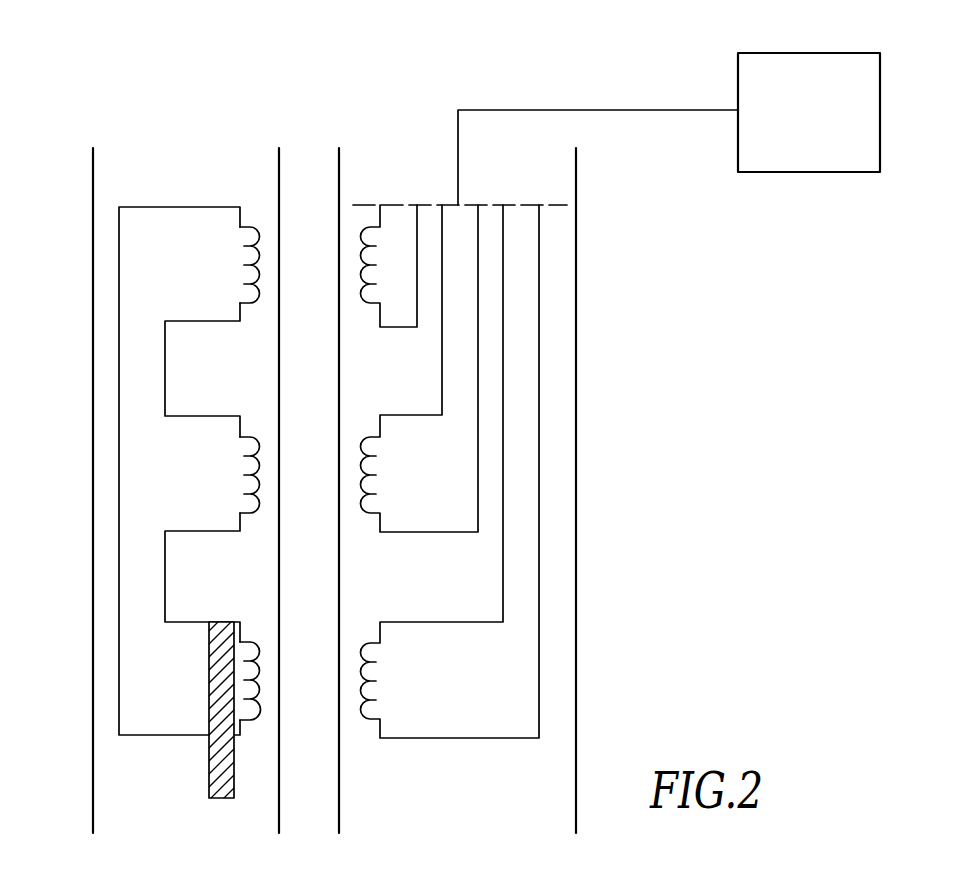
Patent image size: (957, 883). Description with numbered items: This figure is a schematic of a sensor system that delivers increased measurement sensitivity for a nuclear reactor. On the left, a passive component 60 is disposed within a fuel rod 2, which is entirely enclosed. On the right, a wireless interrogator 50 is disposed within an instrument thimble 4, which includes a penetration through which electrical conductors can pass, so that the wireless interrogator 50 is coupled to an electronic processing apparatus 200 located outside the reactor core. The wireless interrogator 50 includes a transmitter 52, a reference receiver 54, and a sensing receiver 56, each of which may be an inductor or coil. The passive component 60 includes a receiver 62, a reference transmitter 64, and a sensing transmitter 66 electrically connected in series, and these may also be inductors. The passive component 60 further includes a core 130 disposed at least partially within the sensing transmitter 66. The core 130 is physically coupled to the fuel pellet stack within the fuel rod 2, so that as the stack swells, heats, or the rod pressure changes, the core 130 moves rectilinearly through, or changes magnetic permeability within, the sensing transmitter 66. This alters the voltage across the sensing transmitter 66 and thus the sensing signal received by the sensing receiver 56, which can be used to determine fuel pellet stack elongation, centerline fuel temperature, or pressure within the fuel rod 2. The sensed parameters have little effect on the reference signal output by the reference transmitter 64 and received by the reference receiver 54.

The fuel rod 2 is at (93, 530).
The instrument thimble 4 is at (576, 497).
The wireless interrogator 50 is at (455, 526).
The transmitter 52 is at (363, 296).
The reference receiver 54 is at (363, 503).
The sensing receiver 56 is at (438, 748).
The passive component 60 is at (190, 406).
The receiver 62 is at (247, 262).
The reference transmitter 64 is at (254, 440).
The sensing transmitter 66 is at (254, 650).
The core 130 is at (209, 771).
The electronic processing apparatus 200 is at (792, 172).